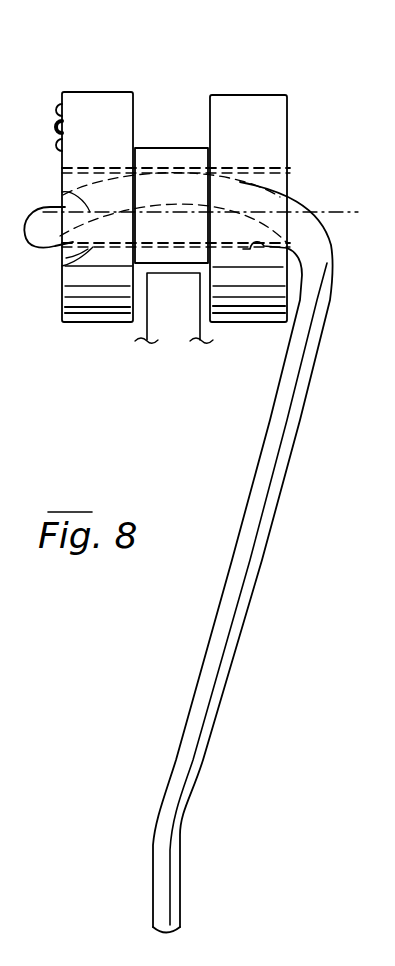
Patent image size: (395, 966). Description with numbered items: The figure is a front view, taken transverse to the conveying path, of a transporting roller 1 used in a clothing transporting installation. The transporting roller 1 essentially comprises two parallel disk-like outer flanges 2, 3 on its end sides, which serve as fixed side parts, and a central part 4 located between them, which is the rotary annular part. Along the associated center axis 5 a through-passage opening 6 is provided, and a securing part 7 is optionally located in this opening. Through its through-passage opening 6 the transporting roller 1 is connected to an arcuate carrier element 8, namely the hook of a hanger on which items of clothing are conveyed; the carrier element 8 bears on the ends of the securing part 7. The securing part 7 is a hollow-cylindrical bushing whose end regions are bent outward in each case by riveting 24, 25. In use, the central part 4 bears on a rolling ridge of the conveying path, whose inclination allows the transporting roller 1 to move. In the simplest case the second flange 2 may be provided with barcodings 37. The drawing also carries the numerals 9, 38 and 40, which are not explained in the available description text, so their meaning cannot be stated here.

The transporting roller 1 is at (244, 67).
The outer flange 2 is at (100, 95).
The outer flange 3 is at (277, 98).
The central part 4 is at (173, 150).
The center axis 5 is at (349, 212).
The through-passage opening 6 is at (62, 265).
The securing part 7 is at (244, 250).
The carrier element 8 is at (278, 452).
The channel 9 is at (165, 317).
The riveting 24 is at (62, 168).
The riveting 25 is at (290, 170).
The barcodings 37 is at (40, 117).
The strap 38 is at (62, 192).
The lower jaw portion 40 is at (125, 323).